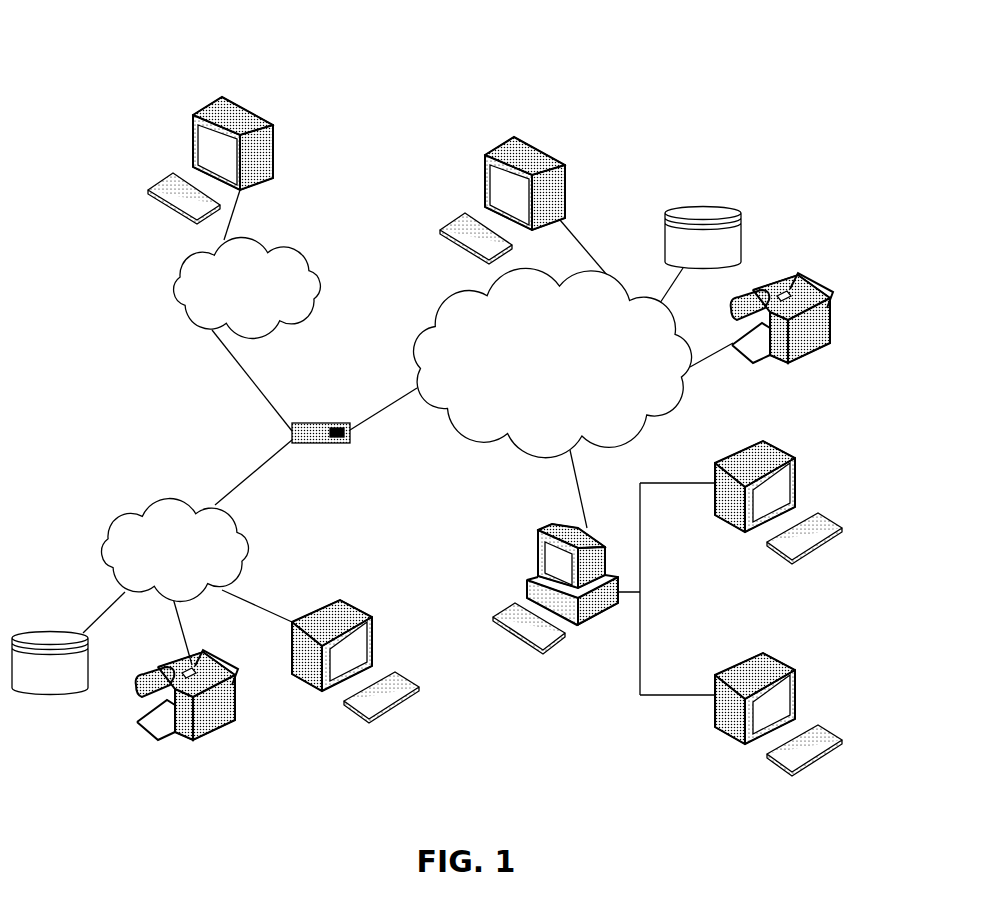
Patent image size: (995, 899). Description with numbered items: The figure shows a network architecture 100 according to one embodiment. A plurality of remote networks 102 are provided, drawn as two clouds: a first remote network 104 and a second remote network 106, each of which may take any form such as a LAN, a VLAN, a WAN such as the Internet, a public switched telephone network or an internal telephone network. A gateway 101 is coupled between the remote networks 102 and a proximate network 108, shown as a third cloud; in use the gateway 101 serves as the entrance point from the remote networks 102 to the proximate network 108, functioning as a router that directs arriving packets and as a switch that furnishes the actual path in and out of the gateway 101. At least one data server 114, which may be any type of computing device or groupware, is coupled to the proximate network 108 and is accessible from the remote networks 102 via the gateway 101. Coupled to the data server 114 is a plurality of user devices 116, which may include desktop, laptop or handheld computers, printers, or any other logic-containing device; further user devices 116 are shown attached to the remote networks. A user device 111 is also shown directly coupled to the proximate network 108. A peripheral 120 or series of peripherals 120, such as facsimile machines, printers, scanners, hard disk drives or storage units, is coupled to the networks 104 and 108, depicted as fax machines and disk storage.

The network architecture 100 is at (120, 78).
The gateway 101 is at (303, 422).
The remote networks 102 is at (140, 352).
The first remote network 104 is at (105, 527).
The second remote network 106 is at (312, 262).
The proximate network 108 is at (652, 420).
The user device 111 is at (565, 165).
The data server 114 is at (538, 545).
The user devices 116 is at (273, 133).
The peripheral 120 is at (742, 213).